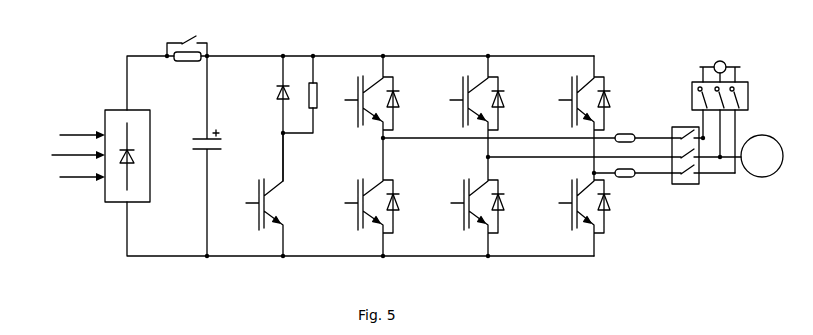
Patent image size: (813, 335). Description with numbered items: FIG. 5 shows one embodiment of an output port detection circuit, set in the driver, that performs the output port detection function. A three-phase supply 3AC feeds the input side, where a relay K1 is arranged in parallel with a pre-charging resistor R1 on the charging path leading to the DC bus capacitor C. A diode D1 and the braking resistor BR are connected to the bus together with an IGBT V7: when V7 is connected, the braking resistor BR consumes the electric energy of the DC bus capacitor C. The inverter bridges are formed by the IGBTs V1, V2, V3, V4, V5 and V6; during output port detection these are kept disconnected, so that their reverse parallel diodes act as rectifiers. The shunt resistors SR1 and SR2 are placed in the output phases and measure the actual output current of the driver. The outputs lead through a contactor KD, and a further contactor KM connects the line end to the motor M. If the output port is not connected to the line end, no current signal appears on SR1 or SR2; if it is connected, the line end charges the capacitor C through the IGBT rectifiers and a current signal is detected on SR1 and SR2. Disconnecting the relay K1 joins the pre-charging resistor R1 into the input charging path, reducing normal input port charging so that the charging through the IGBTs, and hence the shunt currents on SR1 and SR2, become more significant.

The three-phase AC input and rectifier 3AC is at (82, 156).
The relay K1 is at (183, 41).
The pre-charging resistor R1 is at (180, 63).
The DC bus capacitor C is at (201, 137).
The diode D1 is at (277, 92).
The braking resistor BR is at (316, 97).
The IGBT V1 is at (357, 92).
The IGBT V2 is at (571, 196).
The IGBT V3 is at (462, 92).
The IGBT V4 is at (357, 195).
The IGBT V5 is at (571, 92).
The IGBT V6 is at (463, 196).
The IGBT V7 is at (258, 195).
The shunt resistor SR1 is at (625, 134).
The shunt resistor SR2 is at (625, 180).
The mains contactor KM is at (692, 90).
The drive contactor KD is at (682, 185).
The motor M is at (762, 156).